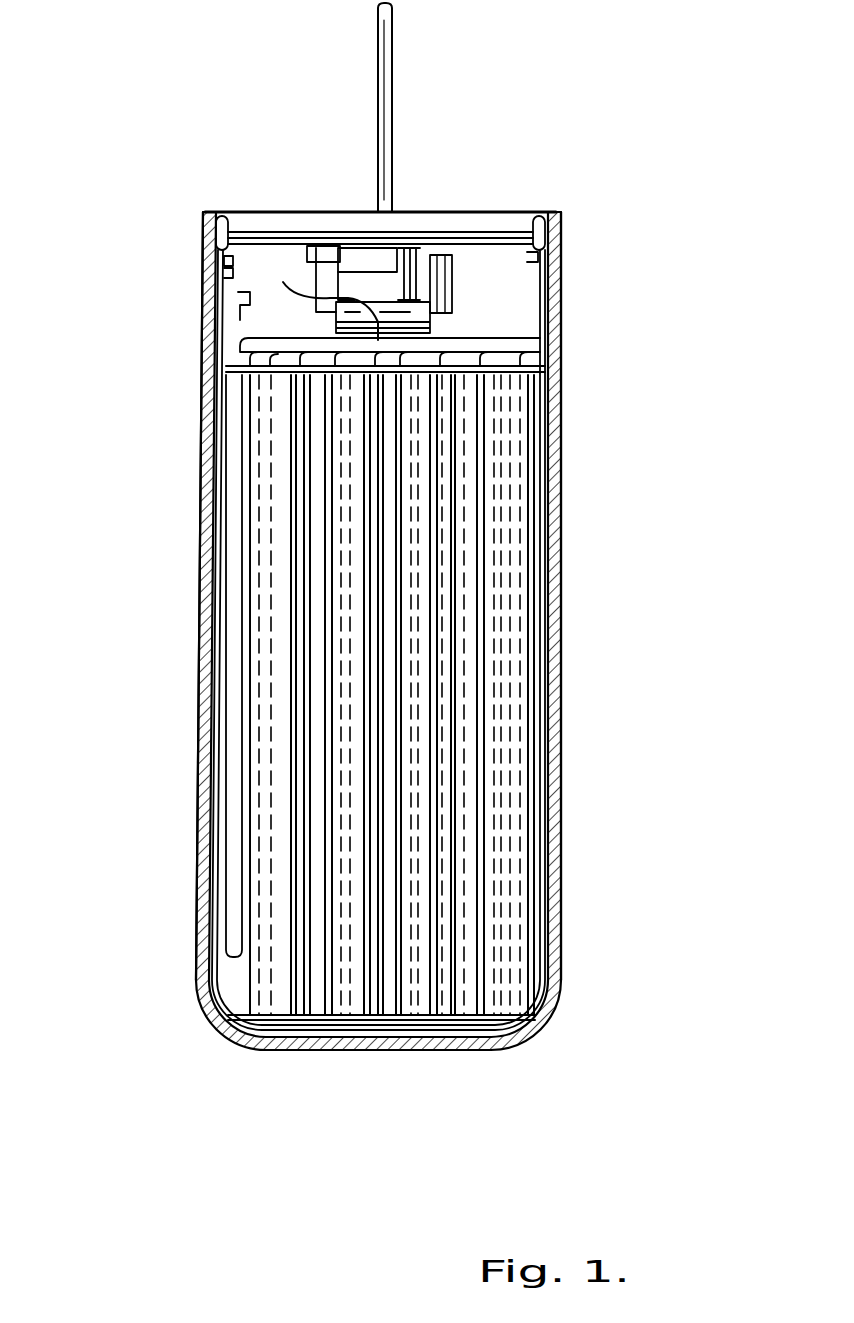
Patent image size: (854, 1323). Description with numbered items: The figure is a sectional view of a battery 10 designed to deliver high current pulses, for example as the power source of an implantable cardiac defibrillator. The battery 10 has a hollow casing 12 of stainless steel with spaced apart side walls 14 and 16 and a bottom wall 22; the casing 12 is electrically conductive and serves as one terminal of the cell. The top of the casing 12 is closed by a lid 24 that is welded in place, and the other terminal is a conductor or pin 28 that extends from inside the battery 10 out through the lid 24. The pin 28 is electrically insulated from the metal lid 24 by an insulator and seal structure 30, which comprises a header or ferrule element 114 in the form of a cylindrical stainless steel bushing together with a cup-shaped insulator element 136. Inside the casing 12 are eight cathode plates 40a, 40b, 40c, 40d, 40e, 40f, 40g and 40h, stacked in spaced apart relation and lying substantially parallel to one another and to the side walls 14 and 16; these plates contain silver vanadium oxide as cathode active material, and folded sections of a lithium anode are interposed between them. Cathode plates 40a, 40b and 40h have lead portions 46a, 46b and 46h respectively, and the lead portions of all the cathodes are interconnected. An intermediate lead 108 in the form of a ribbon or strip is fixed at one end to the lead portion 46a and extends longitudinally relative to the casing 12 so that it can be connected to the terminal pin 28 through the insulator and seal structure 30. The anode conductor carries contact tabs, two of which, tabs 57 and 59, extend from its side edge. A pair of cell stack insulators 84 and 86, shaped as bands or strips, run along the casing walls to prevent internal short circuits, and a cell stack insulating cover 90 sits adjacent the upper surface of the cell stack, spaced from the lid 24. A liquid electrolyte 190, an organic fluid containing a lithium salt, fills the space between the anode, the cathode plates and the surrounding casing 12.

The battery 10 is at (326, 130).
The casing 12 is at (567, 215).
The side wall 14 is at (200, 568).
The side wall 16 is at (552, 545).
The bottom wall 22 is at (366, 1052).
The lid 24 is at (432, 214).
The pin 28 is at (393, 50).
The insulator and seal structure 30 is at (356, 240).
The cathode plate 40a is at (240, 393).
The cathode plate 40b is at (275, 425).
The cathode plate 40c is at (320, 455).
The cathode plate 40d is at (350, 488).
The cathode plate 40e is at (395, 500).
The cathode plate 40f is at (440, 478).
The cathode plate 40g is at (480, 455).
The cathode plate 40h is at (505, 408).
The lead portion 46a is at (262, 330).
The lead portion 46b is at (258, 352).
The lead portion 46h is at (526, 354).
The tab 57 is at (224, 258).
The tab 59 is at (546, 262).
The cell stack insulator 84 is at (212, 216).
The cell stack insulator 86 is at (340, 1052).
The cell stack insulating cover 90 is at (240, 298).
The intermediate lead 108 is at (440, 290).
The header or ferrule element 114 is at (308, 236).
The insulator element 136 is at (478, 240).
The liquid electrolyte 190 is at (442, 1058).